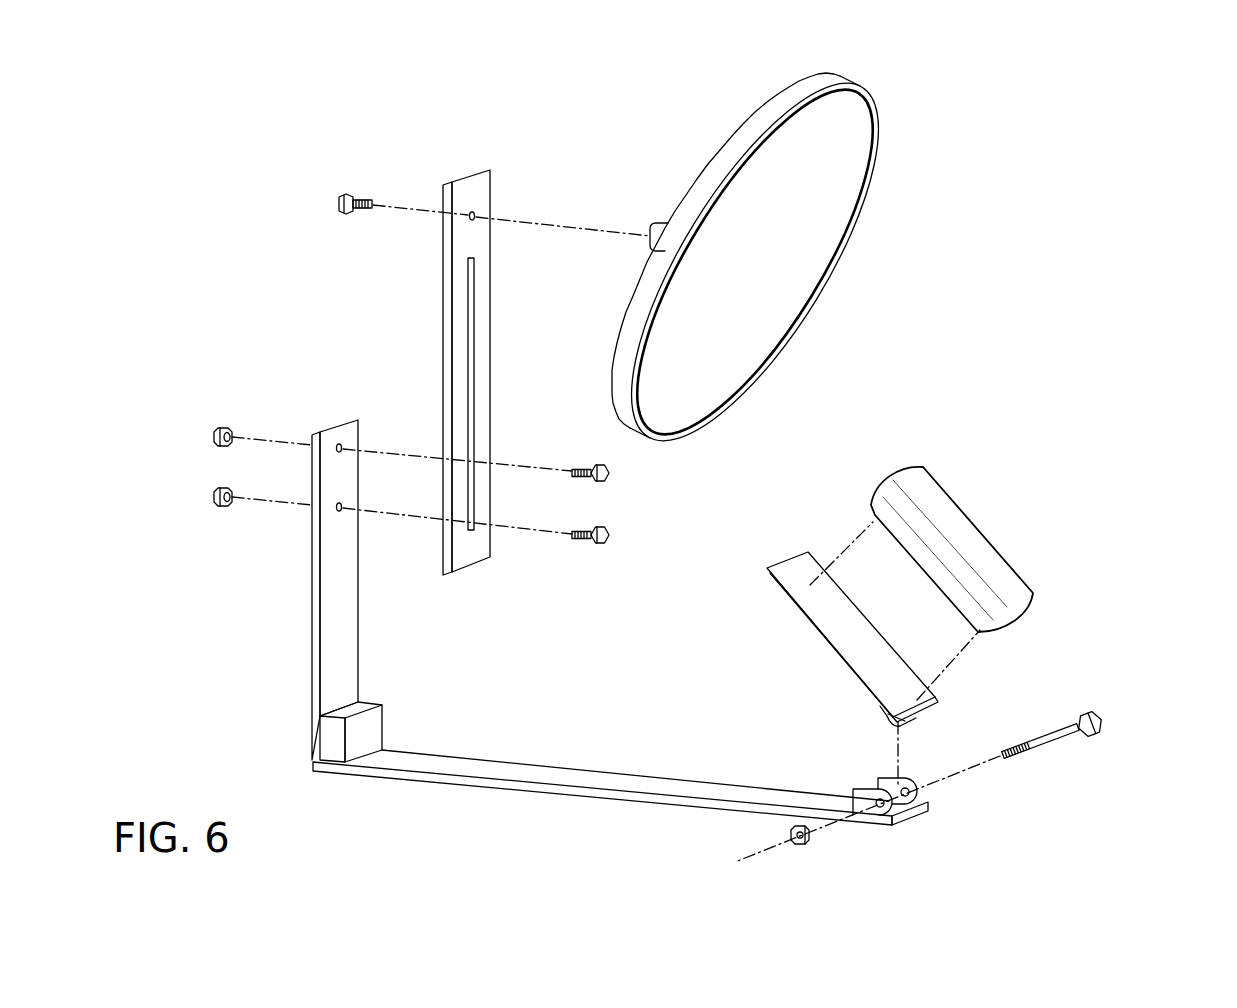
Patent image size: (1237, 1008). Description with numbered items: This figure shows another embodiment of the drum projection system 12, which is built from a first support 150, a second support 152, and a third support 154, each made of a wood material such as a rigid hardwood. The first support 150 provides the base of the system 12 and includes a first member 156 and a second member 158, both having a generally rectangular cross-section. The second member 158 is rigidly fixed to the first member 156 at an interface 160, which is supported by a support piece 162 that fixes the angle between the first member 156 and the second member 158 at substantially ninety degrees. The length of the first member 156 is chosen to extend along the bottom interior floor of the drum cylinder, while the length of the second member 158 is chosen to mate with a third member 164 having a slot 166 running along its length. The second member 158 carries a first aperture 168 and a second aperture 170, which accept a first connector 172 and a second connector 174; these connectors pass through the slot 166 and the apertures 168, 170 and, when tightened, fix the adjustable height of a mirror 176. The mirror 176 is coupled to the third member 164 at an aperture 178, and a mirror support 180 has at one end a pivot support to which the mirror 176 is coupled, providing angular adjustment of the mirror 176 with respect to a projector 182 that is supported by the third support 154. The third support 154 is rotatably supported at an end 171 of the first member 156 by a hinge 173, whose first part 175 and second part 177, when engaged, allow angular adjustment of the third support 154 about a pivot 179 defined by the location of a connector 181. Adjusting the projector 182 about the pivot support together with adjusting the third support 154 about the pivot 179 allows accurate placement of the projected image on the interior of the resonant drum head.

The system 12 is at (1143, 203).
The first support 150 is at (462, 798).
The second support 152 is at (200, 308).
The third support 154 is at (778, 630).
The first member 156 is at (392, 782).
The second member 158 is at (313, 621).
The interface 160 is at (316, 754).
The support piece 162 is at (380, 721).
The third member 164 is at (448, 283).
The slot 166 is at (478, 346).
The first aperture 168 is at (345, 447).
The second aperture 170 is at (345, 510).
The end 171 is at (869, 832).
The first connector 172 is at (620, 479).
The hinge 173 is at (870, 748).
The second connector 174 is at (620, 541).
The first part 175 is at (925, 799).
The mirror 176 is at (738, 150).
The second part 177 is at (870, 712).
The aperture 178 is at (478, 214).
The pivot 179 is at (975, 760).
The mirror support 180 is at (653, 218).
The connector 181 is at (1092, 712).
The projector 182 is at (982, 540).